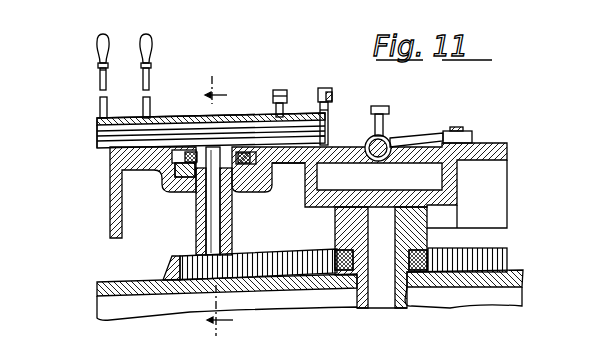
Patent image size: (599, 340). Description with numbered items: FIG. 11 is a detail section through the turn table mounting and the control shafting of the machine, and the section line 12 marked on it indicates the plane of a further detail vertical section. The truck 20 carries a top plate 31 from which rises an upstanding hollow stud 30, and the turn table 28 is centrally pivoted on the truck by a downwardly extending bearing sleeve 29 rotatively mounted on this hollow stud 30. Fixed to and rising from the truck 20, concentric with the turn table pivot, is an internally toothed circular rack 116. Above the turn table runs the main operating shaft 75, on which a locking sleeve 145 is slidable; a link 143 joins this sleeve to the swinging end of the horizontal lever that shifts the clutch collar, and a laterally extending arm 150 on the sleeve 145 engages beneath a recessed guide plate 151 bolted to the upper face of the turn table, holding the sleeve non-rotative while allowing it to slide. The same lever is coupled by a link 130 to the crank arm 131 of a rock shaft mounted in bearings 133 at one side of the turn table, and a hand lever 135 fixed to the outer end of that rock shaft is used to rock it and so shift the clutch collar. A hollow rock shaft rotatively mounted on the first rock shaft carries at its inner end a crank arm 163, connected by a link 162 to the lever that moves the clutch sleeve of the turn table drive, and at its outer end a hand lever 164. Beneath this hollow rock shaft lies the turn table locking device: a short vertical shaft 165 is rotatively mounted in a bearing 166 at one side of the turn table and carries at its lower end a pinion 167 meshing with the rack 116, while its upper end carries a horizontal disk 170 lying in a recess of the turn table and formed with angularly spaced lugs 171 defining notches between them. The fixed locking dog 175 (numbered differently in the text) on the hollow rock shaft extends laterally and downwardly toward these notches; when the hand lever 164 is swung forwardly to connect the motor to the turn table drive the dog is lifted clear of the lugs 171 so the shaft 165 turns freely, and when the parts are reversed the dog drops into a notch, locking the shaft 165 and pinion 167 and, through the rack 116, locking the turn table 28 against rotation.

The section line 12 is at (219, 207).
The truck 20 is at (146, 307).
The turn table 28 is at (508, 150).
The bearing sleeve 29 is at (428, 212).
The hollow stud 30 is at (334, 212).
The top plate 31 is at (97, 288).
The operating shaft 75 is at (384, 137).
The internally toothed circular rack 116 is at (510, 250).
The link 130 is at (328, 90).
The crank arm 131 is at (329, 110).
The bearings 133 is at (118, 117).
The hand lever 135 is at (99, 79).
The link 143 is at (383, 106).
The locking sleeve 145 is at (370, 139).
The arm 150 is at (416, 136).
The guide plate 151 is at (470, 131).
The link 162 is at (286, 92).
The crank arm 163 is at (272, 98).
The hand lever 164 is at (151, 40).
The vertical shaft 165 is at (205, 213).
The bearing 166 is at (197, 244).
The pinion 167 is at (200, 283).
The disk 170 is at (110, 180).
The lugs 171 is at (248, 178).
The bushing 175 is at (178, 181).